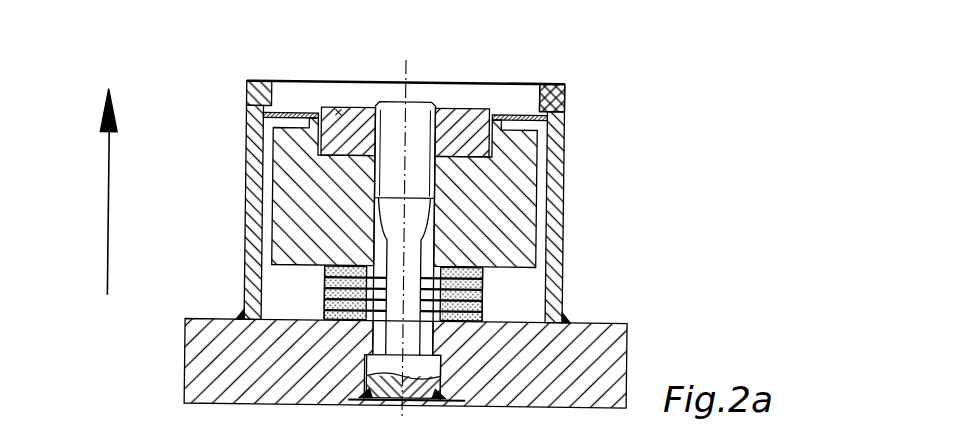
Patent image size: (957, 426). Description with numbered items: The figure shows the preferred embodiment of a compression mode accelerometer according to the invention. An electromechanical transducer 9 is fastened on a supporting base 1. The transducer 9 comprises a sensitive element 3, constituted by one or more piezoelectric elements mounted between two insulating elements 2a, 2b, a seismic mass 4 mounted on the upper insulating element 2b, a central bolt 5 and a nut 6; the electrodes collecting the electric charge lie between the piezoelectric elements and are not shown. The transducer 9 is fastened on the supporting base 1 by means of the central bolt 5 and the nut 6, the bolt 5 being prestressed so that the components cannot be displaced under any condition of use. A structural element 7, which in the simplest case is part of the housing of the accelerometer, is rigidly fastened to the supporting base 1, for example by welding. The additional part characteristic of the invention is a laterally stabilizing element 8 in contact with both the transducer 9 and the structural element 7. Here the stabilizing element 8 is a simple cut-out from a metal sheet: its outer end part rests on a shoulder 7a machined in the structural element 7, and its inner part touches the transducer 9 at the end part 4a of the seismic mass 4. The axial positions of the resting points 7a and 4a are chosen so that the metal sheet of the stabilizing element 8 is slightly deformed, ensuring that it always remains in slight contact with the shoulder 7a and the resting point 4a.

The supporting base 1 is at (583, 328).
The insulating element 2a is at (487, 313).
The insulating element 2b is at (500, 263).
The sensitive element 3 is at (305, 290).
The seismic mass 4 is at (528, 182).
The end part of the seismic mass 4a is at (497, 112).
The central bolt 5 is at (418, 97).
The nut 6 is at (337, 107).
The structural element 7 is at (260, 202).
The shoulder 7a is at (245, 83).
The laterally stabilizing element 8 is at (528, 112).
The electromechanical transducer 9 is at (381, 74).